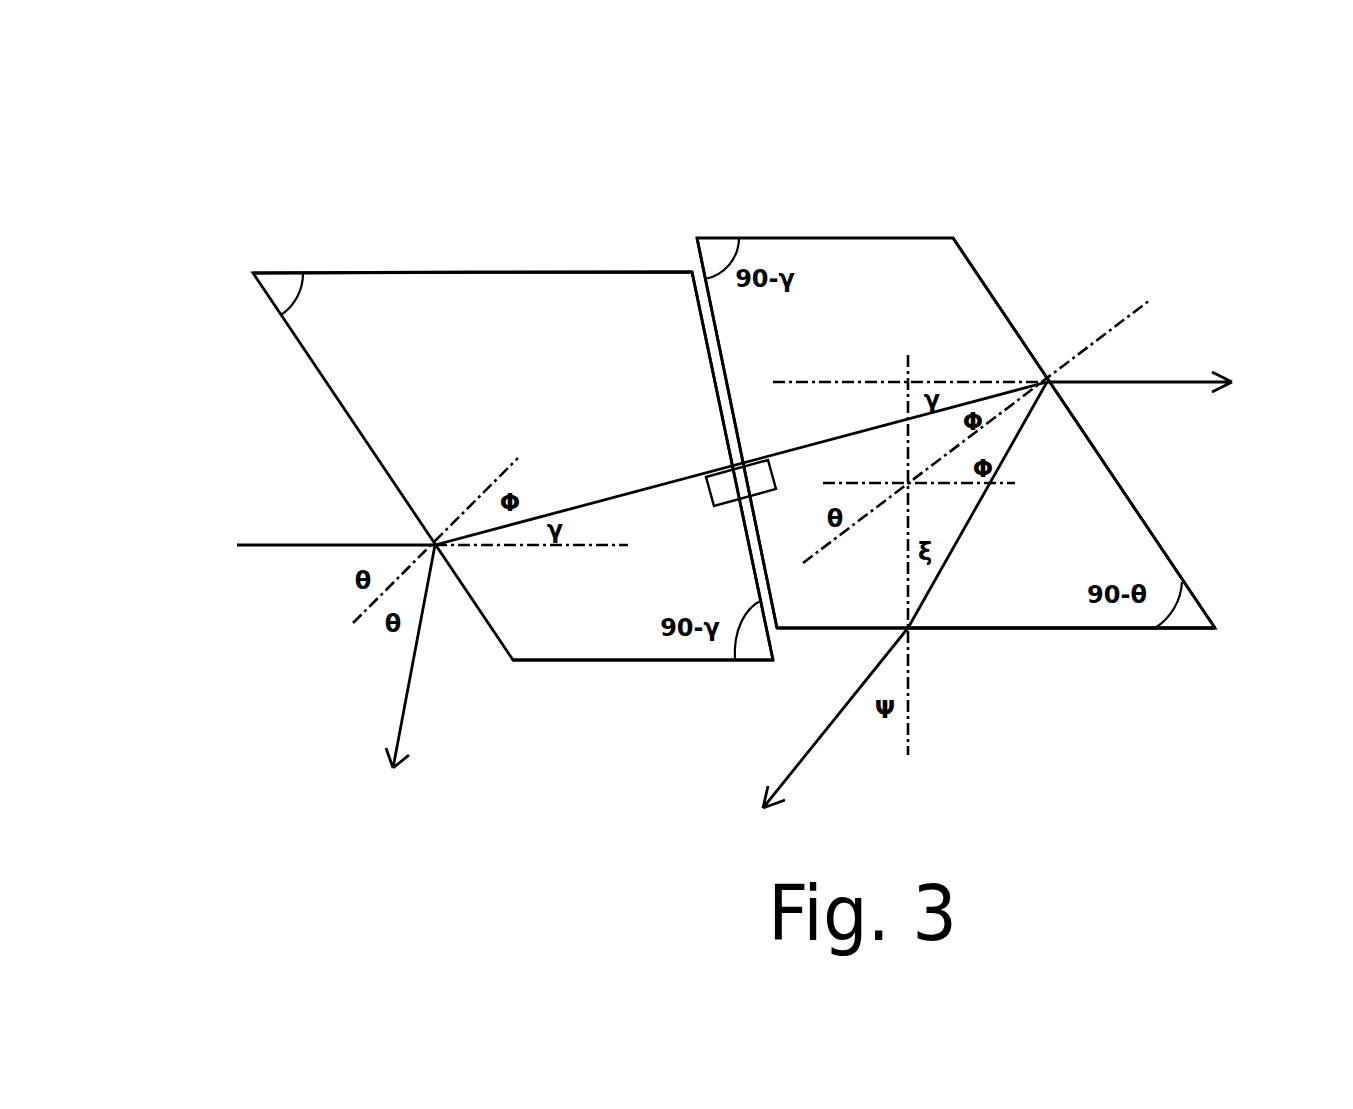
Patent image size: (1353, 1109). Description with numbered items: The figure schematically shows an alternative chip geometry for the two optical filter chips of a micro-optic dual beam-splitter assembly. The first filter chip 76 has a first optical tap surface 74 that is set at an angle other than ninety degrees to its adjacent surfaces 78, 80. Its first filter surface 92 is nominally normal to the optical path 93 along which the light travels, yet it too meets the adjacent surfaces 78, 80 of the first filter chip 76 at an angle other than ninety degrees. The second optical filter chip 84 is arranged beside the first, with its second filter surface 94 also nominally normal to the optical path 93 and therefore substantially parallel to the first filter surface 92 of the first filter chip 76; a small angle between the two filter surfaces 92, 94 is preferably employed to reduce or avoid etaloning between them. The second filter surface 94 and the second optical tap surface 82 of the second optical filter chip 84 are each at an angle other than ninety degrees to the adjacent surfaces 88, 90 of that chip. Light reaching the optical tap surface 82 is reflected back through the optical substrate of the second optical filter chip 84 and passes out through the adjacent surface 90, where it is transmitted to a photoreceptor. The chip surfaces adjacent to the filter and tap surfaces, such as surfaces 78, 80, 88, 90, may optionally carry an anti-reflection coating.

The first optical tap surface 74 is at (307, 357).
The first filter chip 76 is at (588, 293).
The adjacent surface 78 is at (408, 272).
The adjacent surface 80 is at (583, 660).
The second optical tap surface 82 is at (1118, 482).
The second optical filter chip 84 is at (1033, 612).
The adjacent surface 88 is at (878, 238).
The adjacent surface 90 is at (960, 632).
The first filter surface 92 is at (775, 640).
The optical path 93 is at (640, 490).
The second filter surface 94 is at (693, 250).